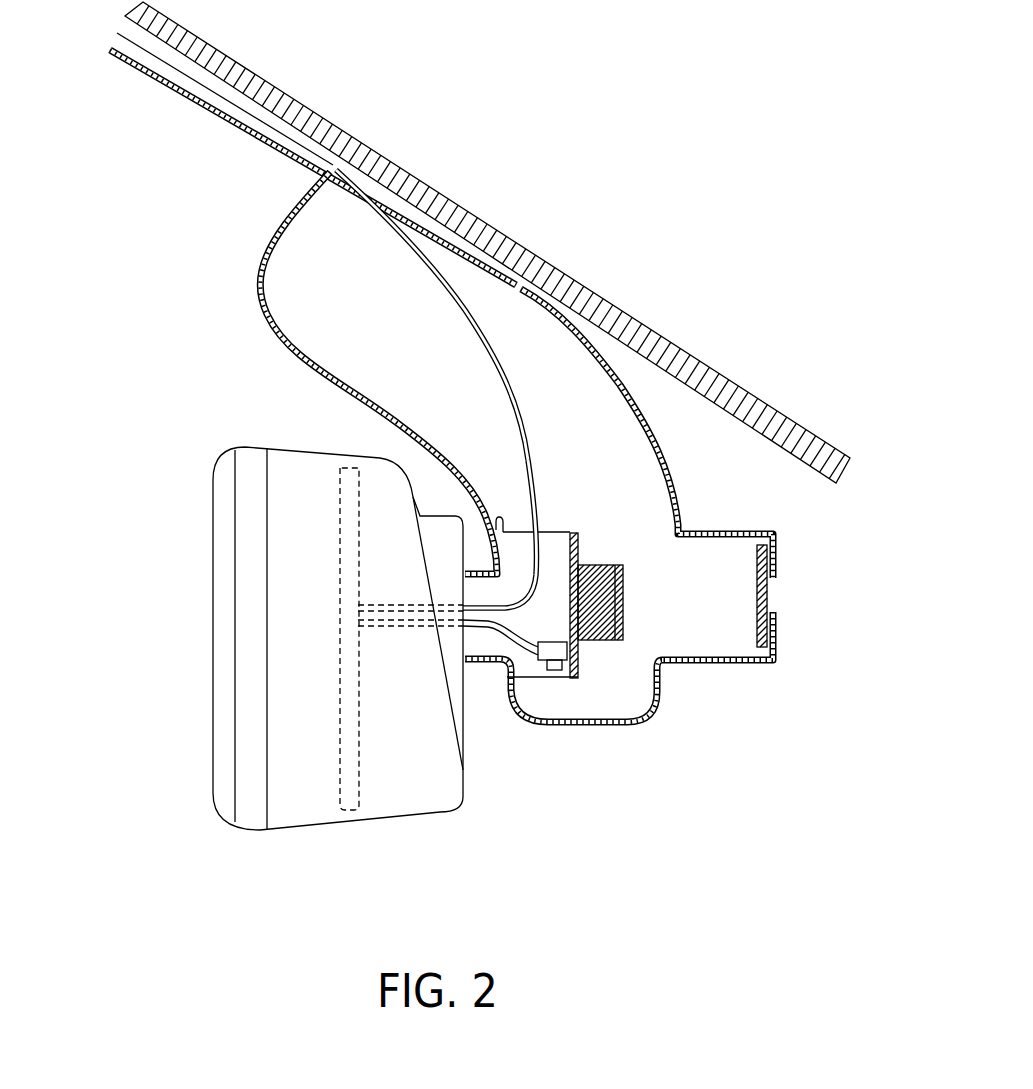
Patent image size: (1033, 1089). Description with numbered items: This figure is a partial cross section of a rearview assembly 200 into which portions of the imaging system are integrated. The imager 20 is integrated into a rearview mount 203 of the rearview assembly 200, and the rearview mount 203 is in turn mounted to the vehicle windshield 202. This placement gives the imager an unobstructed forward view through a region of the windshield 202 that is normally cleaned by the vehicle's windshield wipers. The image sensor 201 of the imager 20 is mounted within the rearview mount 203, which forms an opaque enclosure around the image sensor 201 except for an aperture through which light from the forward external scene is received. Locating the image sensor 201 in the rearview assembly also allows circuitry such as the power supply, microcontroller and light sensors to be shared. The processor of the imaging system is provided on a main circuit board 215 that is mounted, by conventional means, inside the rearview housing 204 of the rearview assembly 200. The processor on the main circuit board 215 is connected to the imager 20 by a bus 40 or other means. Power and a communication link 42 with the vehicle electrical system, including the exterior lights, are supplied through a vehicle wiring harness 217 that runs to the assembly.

The imager 20 is at (620, 660).
The bus 40 is at (492, 628).
The communication link 42 is at (520, 462).
The rearview assembly 200 is at (275, 677).
The image sensor 201 is at (567, 602).
The windshield 202 is at (562, 250).
The rearview mount 203 is at (300, 266).
The rearview housing 204 is at (210, 720).
The main circuit board 215 is at (360, 747).
The vehicle wiring harness 217 is at (503, 401).